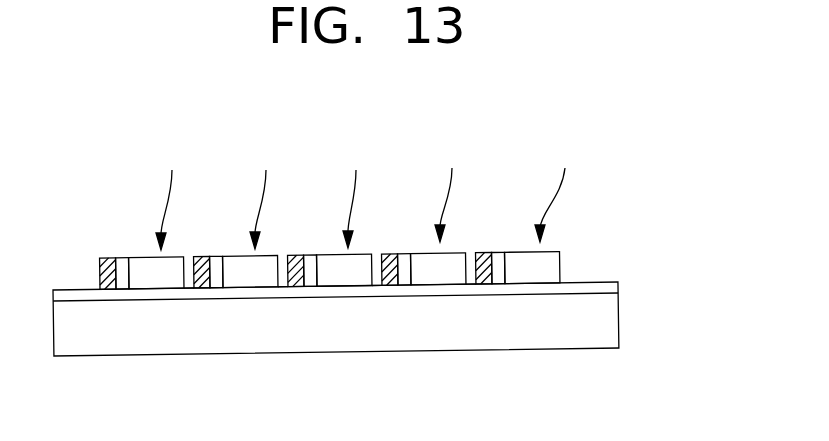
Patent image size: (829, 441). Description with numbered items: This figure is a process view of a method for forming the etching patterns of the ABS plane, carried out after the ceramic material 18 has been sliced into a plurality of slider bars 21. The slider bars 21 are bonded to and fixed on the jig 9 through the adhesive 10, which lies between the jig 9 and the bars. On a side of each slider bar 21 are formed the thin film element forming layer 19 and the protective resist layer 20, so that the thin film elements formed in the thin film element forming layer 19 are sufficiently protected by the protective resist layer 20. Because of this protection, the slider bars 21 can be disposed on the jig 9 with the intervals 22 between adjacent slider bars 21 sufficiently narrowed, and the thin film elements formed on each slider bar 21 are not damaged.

The jig 9 is at (610, 323).
The adhesive 10 is at (605, 286).
The ceramic material 18 is at (155, 279).
The thin film element forming layer 19 is at (120, 257).
The protective resist layer 20 is at (103, 257).
The slider bar 21 is at (368, 194).
The interval 22 is at (190, 288).